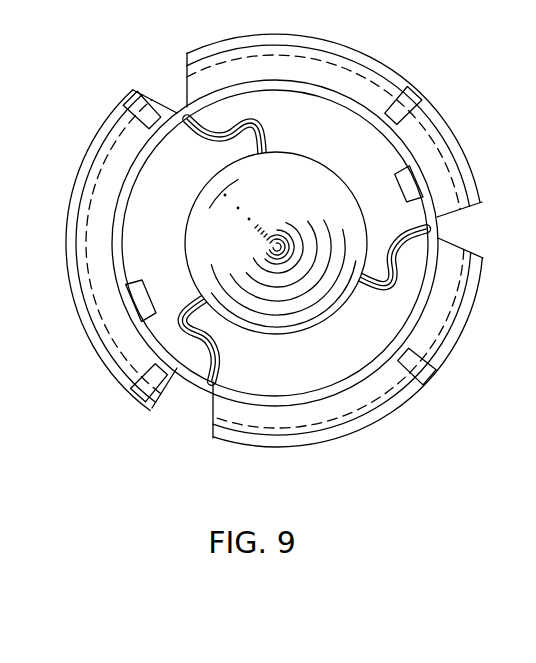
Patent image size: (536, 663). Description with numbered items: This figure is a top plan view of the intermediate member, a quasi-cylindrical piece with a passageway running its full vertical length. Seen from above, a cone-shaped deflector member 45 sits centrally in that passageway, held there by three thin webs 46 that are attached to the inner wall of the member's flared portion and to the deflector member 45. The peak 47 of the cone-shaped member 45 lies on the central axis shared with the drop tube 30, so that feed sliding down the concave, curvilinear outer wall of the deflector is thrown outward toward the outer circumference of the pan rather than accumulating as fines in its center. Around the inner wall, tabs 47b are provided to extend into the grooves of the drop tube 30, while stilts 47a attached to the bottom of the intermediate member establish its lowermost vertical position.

The drop tube 30 is at (101, 366).
The cone-shaped deflector member 45 is at (308, 174).
The thin webs 46 is at (236, 124).
The peak 47 is at (283, 234).
The stilts 47a is at (410, 101).
The tabs 47b is at (410, 182).